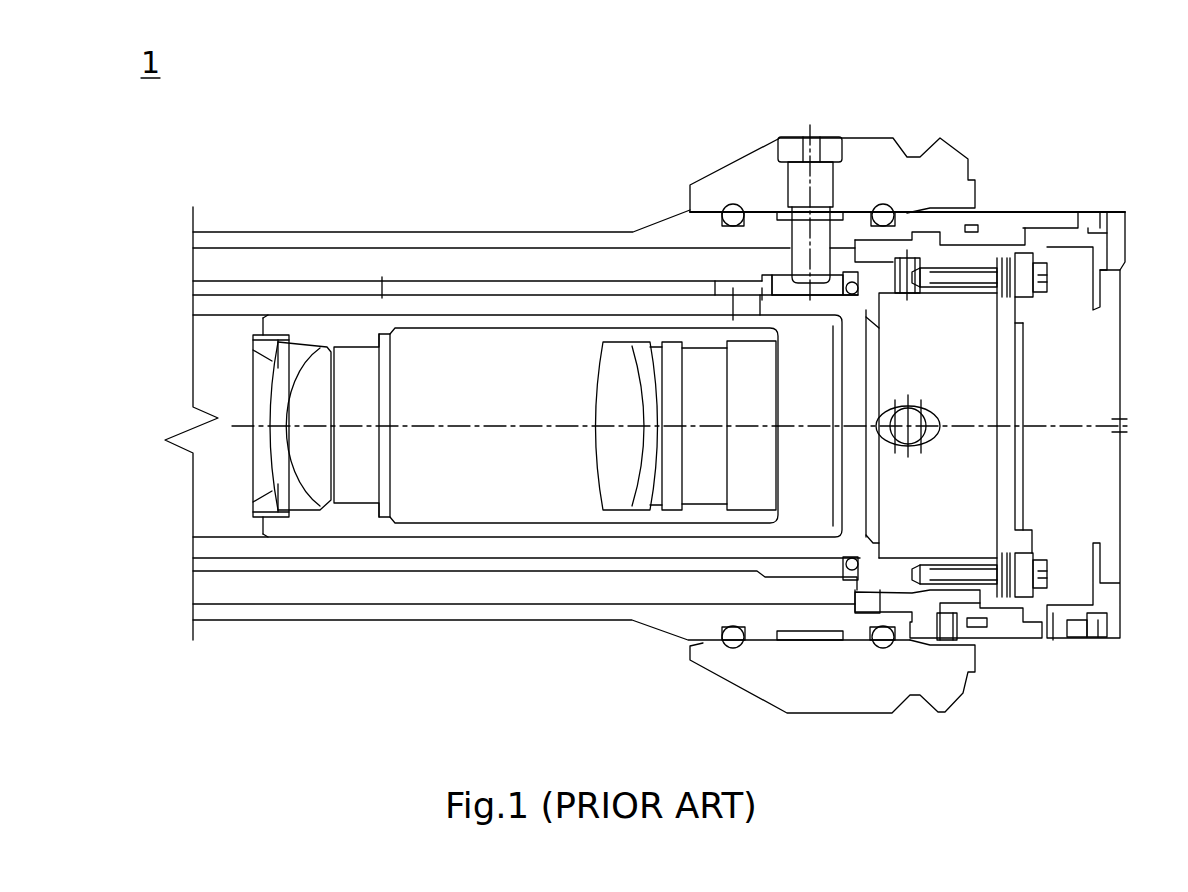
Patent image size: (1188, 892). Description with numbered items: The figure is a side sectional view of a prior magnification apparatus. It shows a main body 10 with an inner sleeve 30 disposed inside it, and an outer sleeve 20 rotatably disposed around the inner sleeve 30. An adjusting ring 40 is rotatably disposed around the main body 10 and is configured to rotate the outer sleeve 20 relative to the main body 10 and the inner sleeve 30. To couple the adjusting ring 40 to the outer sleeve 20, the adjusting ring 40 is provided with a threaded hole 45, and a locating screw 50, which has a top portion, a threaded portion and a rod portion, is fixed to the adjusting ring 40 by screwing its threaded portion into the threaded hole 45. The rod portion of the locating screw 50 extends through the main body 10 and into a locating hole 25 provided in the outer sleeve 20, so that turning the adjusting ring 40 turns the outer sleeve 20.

The main body 10 is at (773, 232).
The outer sleeve 20 is at (743, 288).
The locating hole 25 is at (780, 288).
The inner sleeve 30 is at (857, 307).
The adjusting ring 40 is at (877, 172).
The threaded hole 45 is at (788, 180).
The locating screw 50 is at (802, 177).